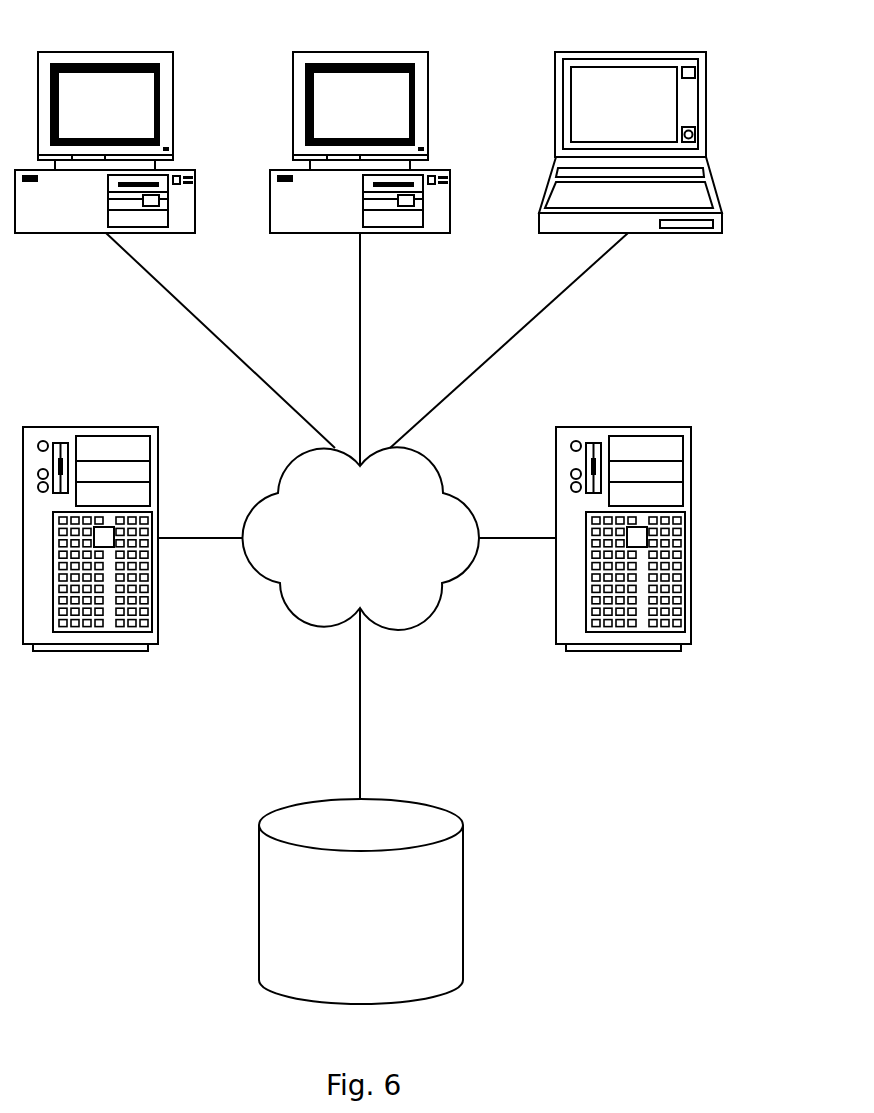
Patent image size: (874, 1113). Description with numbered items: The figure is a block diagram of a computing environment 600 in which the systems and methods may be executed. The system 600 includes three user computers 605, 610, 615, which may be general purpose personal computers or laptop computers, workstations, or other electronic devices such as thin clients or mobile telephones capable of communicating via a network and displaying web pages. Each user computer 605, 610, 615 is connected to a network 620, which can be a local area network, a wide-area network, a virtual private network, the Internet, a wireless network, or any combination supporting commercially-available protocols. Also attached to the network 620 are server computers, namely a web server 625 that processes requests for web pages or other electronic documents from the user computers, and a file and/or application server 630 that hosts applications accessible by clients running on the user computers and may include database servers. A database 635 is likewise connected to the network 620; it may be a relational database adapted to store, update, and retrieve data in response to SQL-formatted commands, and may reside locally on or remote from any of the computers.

The computing environment 600 is at (679, 818).
The user computer 605 is at (195, 233).
The user computer 610 is at (450, 233).
The user computer 615 is at (722, 233).
The network 620 is at (412, 623).
The web server 625 is at (158, 614).
The file and/or application server 630 is at (690, 614).
The database 635 is at (463, 902).